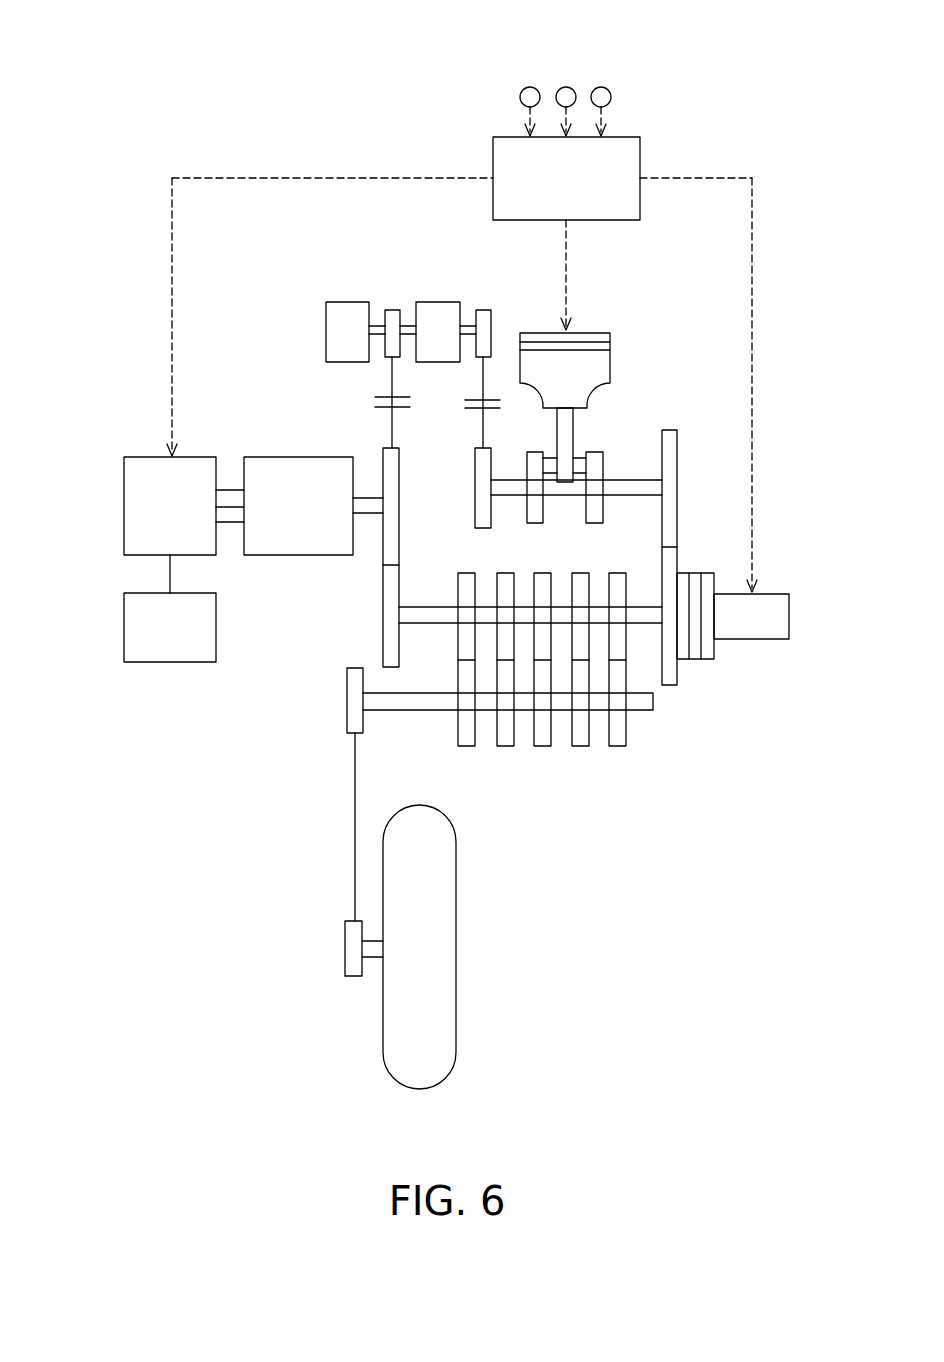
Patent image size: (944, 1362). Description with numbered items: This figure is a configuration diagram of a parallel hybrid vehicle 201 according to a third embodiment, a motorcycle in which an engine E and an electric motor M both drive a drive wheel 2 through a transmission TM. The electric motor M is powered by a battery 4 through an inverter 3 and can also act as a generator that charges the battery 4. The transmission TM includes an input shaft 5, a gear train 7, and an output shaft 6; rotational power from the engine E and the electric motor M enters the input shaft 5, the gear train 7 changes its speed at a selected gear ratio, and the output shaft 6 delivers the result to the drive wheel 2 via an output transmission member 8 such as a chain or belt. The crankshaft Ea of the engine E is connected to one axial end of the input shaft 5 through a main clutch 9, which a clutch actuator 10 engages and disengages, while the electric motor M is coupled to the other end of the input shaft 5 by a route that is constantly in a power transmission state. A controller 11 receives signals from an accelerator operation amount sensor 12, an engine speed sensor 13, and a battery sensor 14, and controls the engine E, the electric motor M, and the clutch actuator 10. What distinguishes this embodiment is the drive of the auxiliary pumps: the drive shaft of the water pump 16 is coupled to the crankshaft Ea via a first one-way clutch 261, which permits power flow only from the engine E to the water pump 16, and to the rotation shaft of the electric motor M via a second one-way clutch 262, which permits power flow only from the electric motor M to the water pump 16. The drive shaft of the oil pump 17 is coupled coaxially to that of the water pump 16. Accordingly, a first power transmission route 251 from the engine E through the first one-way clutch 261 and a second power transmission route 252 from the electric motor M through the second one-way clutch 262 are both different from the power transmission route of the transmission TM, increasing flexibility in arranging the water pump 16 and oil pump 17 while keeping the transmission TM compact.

The parallel hybrid vehicle 201 is at (228, 125).
The controller 11 is at (640, 158).
The accelerator operation amount sensor 12 is at (530, 87).
The engine speed sensor 13 is at (566, 87).
The battery sensor 14 is at (601, 87).
The oil pump 17 is at (346, 302).
The water pump 16 is at (436, 302).
The first power transmission route 251 is at (484, 375).
The second power transmission route 252 is at (391, 378).
The first one-way clutch 261 is at (468, 409).
The second one-way clutch 262 is at (378, 405).
The engine E is at (612, 359).
The crankshaft Ea is at (627, 480).
The main clutch 9 is at (700, 659).
The clutch actuator 10 is at (752, 639).
The electric motor M is at (266, 457).
The inverter 3 is at (124, 505).
The battery 4 is at (124, 627).
The input shaft 5 is at (425, 623).
The transmission TM is at (618, 757).
The gear train 7 is at (505, 746).
The output shaft 6 is at (415, 710).
The output transmission member 8 is at (355, 820).
The drive wheel 2 is at (456, 977).